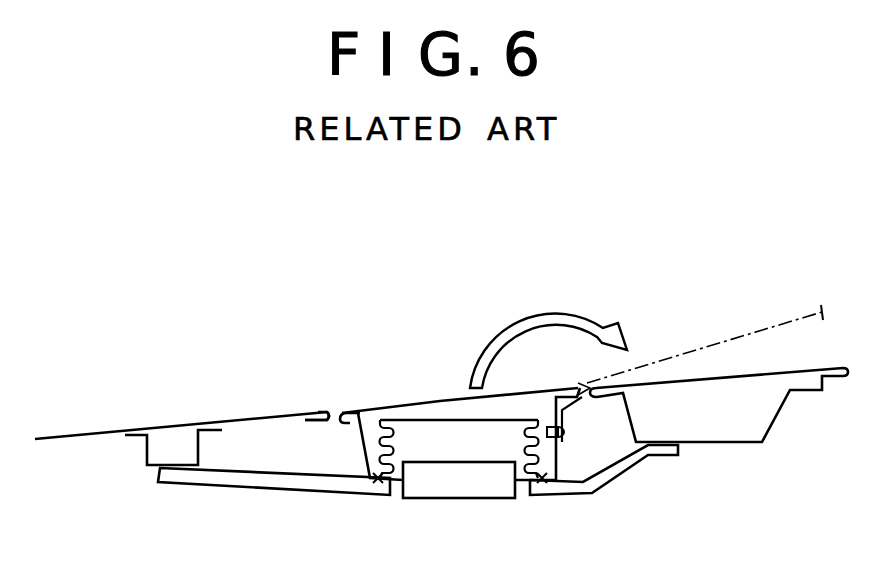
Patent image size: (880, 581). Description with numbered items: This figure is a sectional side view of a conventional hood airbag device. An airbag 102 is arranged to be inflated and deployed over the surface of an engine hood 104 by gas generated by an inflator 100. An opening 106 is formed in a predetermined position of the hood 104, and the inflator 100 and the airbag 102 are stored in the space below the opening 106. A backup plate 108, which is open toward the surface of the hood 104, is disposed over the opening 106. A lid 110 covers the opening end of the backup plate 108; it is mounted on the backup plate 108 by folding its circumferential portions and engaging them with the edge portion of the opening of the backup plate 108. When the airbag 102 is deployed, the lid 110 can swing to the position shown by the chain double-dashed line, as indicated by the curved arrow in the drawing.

The inflator 100 is at (458, 488).
The airbag 102 is at (415, 418).
The engine hood 104 is at (253, 416).
The opening 106 is at (334, 412).
The backup plate 108 is at (365, 446).
The lid 110 is at (702, 347).